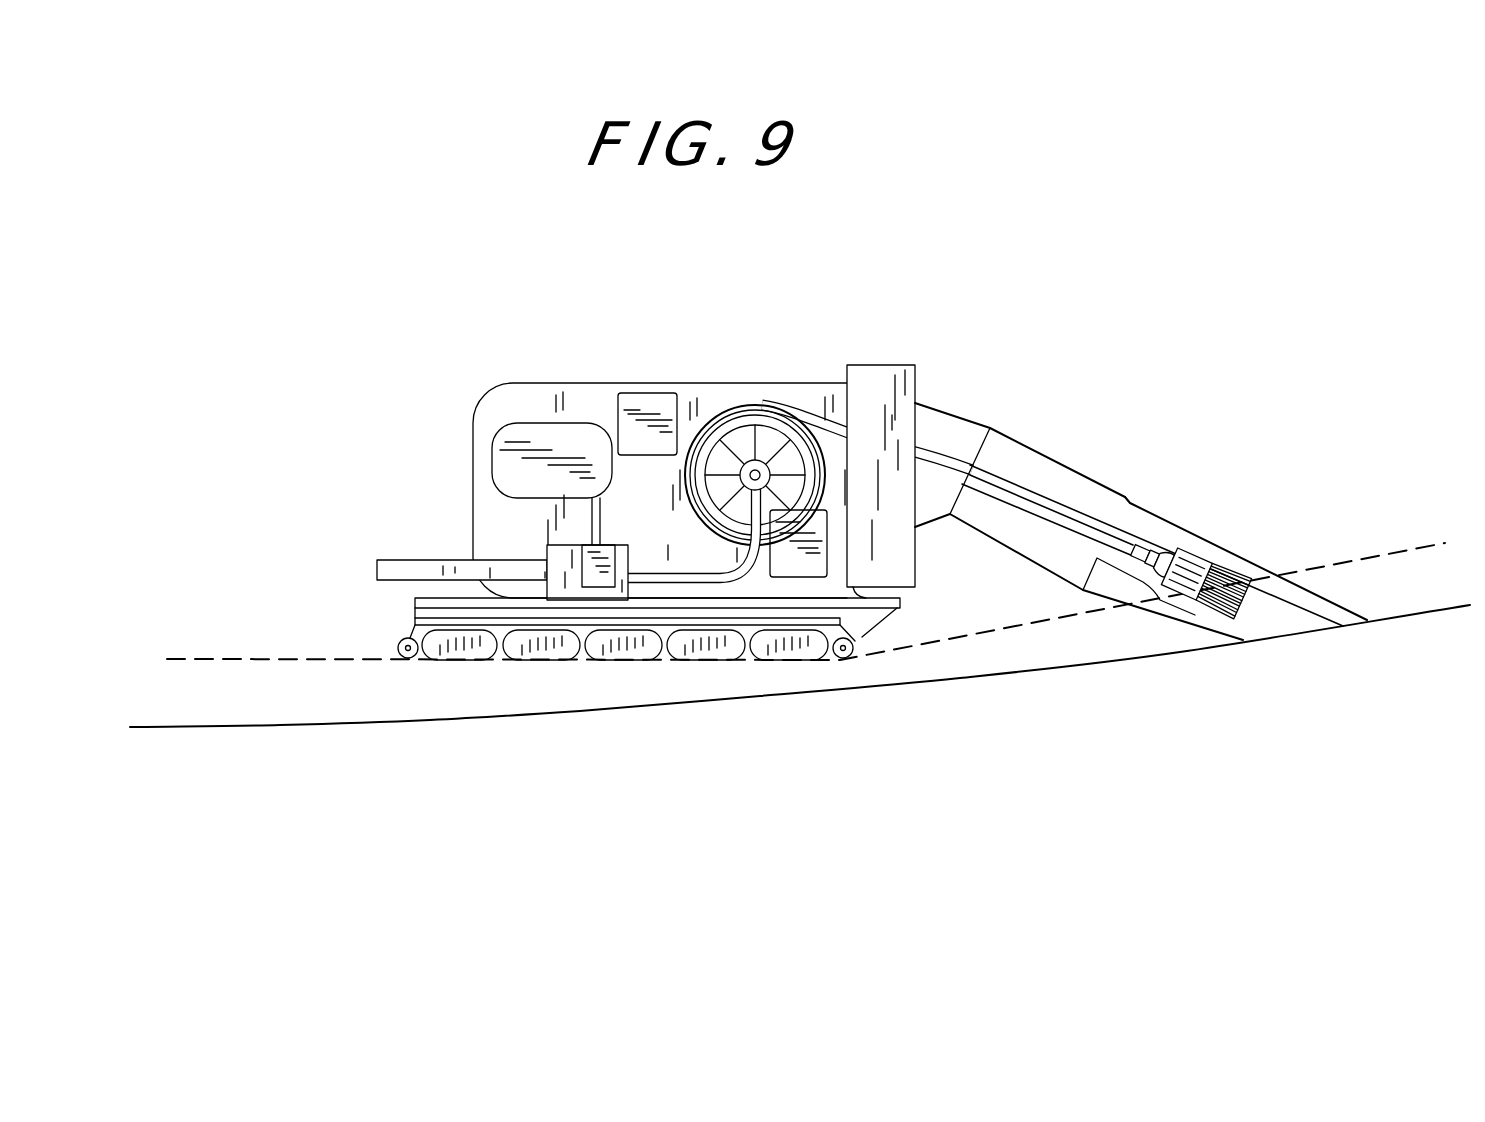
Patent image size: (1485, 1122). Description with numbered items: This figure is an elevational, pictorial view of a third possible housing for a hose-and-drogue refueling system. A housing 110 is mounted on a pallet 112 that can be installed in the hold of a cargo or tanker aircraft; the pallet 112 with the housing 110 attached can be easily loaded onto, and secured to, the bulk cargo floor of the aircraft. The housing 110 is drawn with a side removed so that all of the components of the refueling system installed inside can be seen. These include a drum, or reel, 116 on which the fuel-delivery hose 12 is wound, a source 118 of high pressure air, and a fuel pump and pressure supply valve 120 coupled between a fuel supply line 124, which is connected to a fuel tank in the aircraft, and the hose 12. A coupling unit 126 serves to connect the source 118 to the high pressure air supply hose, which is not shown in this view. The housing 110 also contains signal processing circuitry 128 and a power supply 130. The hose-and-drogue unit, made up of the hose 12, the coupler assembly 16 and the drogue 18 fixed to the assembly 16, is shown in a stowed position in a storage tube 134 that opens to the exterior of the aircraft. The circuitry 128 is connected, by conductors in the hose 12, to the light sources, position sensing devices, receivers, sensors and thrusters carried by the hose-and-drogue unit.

The hose 12 is at (973, 462).
The coupler assembly 16 is at (1165, 585).
The drogue 18 is at (1240, 585).
The housing 110 is at (788, 383).
The pallet 112 is at (403, 619).
The drum 116 is at (728, 405).
The source of high pressure air 118 is at (516, 438).
The fuel pump and pressure supply valve 120 is at (563, 583).
The fuel supply line 124 is at (378, 560).
The coupling unit 126 is at (612, 580).
The signal processing circuitry 128 is at (643, 395).
The power supply 130 is at (805, 562).
The storage tube 134 is at (1165, 512).